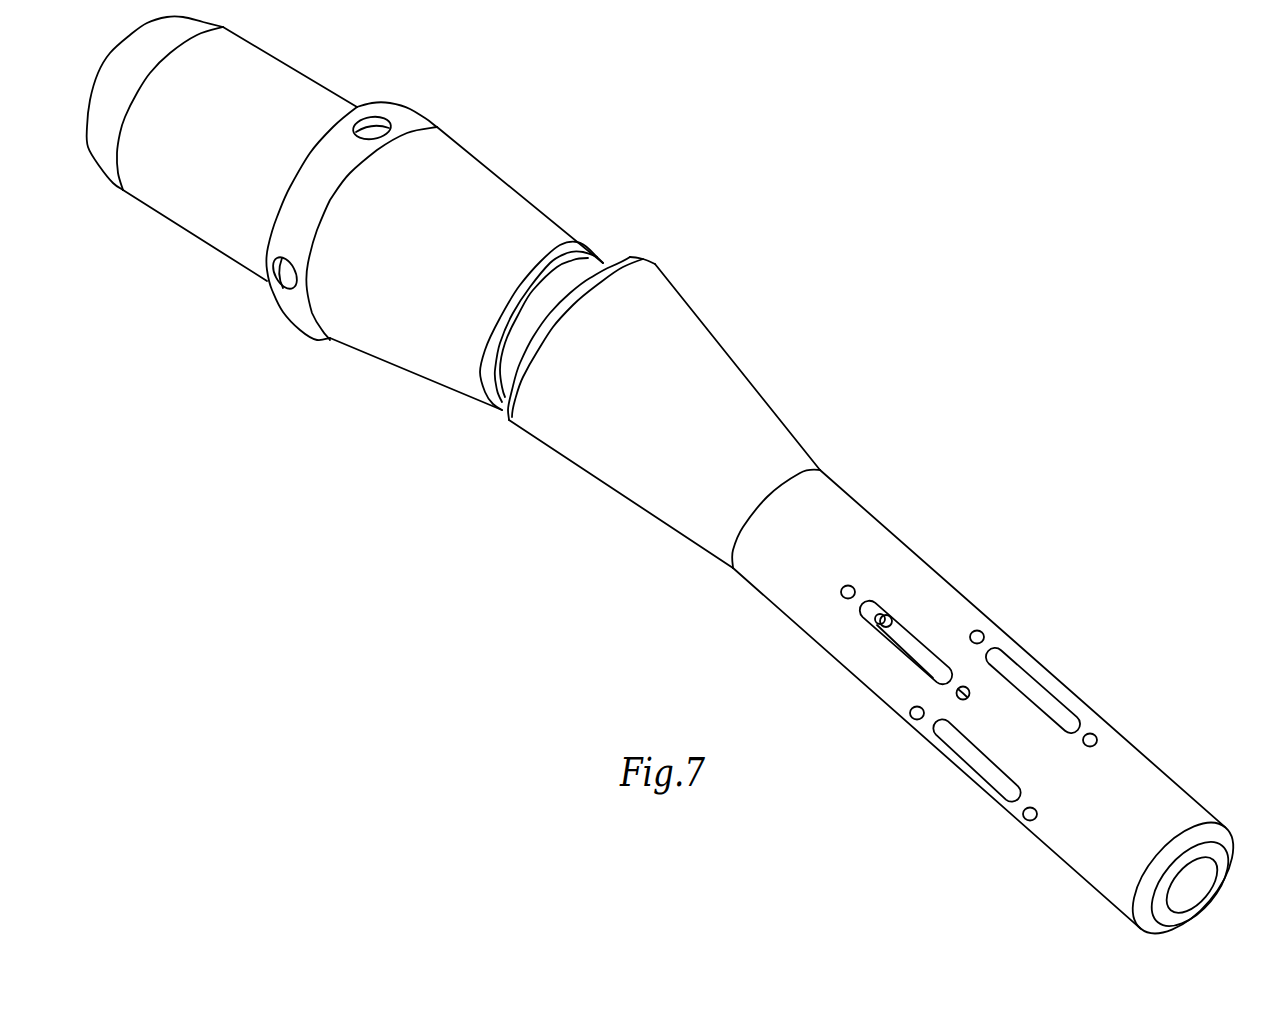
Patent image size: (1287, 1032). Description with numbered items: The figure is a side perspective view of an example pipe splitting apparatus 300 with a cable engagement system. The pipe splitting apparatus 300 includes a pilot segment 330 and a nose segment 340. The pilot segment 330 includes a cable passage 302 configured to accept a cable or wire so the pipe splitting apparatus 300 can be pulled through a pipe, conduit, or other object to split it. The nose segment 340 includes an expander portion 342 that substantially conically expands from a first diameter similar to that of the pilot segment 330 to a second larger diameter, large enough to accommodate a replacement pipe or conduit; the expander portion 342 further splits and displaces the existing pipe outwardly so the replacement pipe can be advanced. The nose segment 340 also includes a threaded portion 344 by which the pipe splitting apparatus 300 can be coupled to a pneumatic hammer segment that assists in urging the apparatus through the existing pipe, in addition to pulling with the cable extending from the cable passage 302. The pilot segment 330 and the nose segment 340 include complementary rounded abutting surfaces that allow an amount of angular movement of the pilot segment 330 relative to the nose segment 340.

The pipe splitting apparatus 300 is at (1076, 166).
The nose segment 340 is at (540, 196).
The threaded portion 344 is at (300, 88).
The expander portion 342 is at (457, 171).
The pilot segment 330 is at (1152, 737).
The cable passage 302 is at (1188, 886).